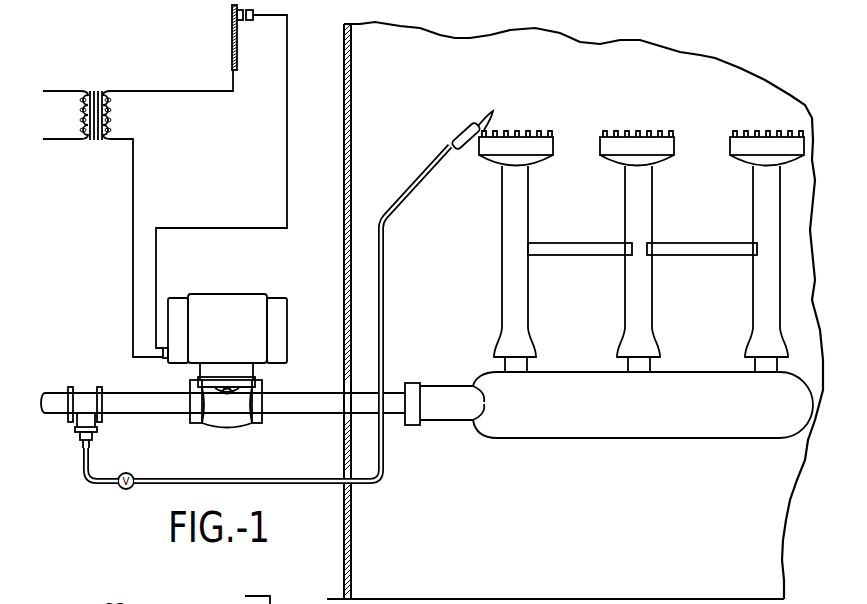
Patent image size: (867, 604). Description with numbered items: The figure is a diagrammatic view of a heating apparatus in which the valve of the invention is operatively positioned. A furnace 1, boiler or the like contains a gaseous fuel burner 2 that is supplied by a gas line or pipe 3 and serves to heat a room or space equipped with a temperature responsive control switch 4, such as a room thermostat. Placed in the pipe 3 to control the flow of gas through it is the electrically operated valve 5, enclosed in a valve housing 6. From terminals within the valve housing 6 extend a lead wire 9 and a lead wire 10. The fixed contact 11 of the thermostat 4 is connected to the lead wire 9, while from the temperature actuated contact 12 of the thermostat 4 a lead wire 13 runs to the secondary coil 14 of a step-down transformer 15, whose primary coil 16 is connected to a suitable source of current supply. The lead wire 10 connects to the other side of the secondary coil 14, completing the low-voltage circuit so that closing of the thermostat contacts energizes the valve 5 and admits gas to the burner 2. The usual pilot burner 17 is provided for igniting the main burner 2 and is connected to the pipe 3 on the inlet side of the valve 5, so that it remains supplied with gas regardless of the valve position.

The furnace 1 is at (458, 42).
The gaseous fuel burner 2 is at (634, 124).
The gas line or pipe 3 is at (308, 416).
The temperature responsive control switch 4 is at (231, 24).
The electrically operated valve 5 is at (229, 292).
The valve housing 6 is at (283, 327).
The lead wire 9 is at (157, 280).
The lead wire 10 is at (133, 283).
The fixed contact 11 is at (254, 20).
The temperature actuated contact 12 is at (240, 21).
The lead wire 13 is at (178, 91).
The secondary coil 14 is at (108, 100).
The step-down transformer 15 is at (97, 83).
The primary coil 16 is at (80, 104).
The pilot burner 17 is at (465, 133).